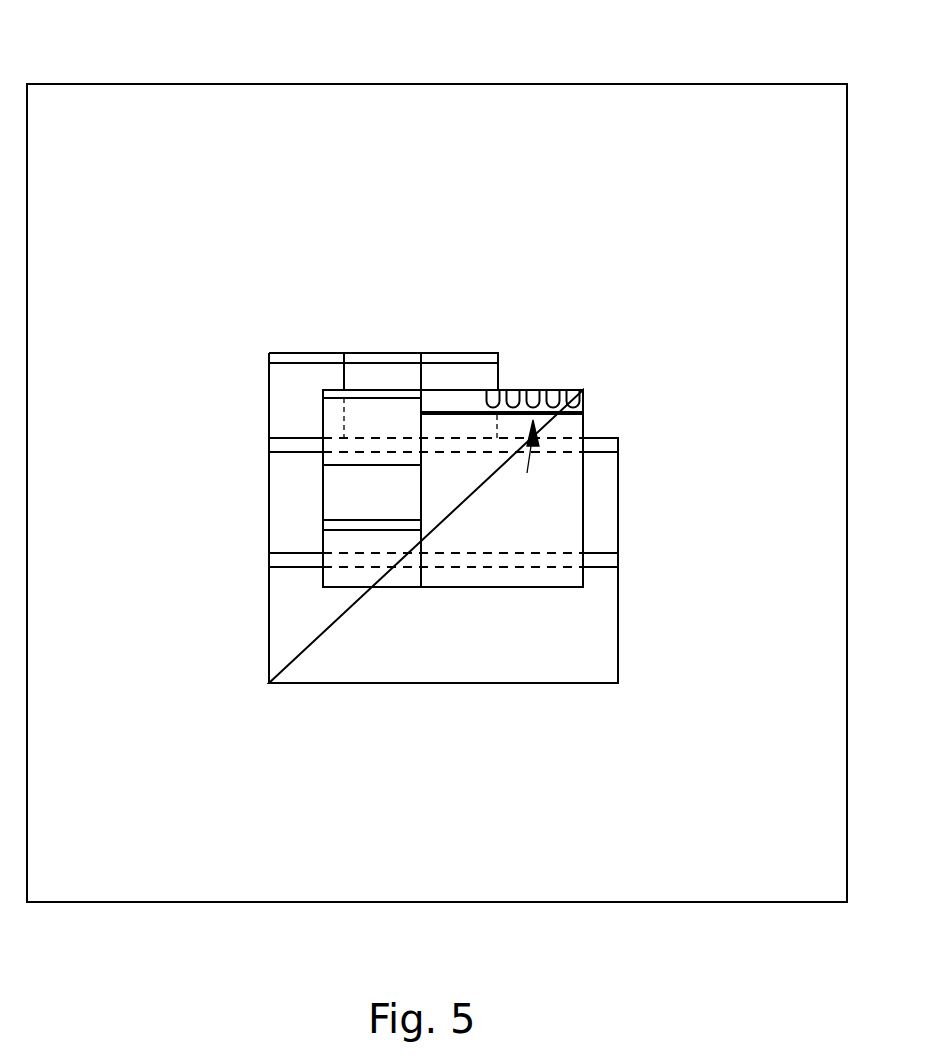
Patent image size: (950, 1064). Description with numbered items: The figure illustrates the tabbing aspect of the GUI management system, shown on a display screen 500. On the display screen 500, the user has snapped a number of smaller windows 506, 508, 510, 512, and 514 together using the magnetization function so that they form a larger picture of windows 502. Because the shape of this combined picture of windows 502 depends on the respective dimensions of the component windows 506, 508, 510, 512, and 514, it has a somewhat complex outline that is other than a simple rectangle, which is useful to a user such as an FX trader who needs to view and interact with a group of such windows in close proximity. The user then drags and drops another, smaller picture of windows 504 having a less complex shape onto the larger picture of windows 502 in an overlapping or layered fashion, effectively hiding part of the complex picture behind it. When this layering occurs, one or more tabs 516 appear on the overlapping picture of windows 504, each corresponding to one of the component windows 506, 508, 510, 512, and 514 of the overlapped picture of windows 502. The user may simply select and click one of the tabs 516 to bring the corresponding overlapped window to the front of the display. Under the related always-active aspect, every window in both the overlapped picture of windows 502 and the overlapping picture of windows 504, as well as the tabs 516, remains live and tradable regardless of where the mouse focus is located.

The display screen 500 is at (468, 84).
The picture of windows 502 is at (618, 523).
The picture of windows 504 is at (583, 423).
The window 506 is at (402, 387).
The window 508 is at (320, 387).
The window 510 is at (316, 507).
The window 512 is at (455, 647).
The window 514 is at (478, 387).
The tabs 516 is at (527, 473).